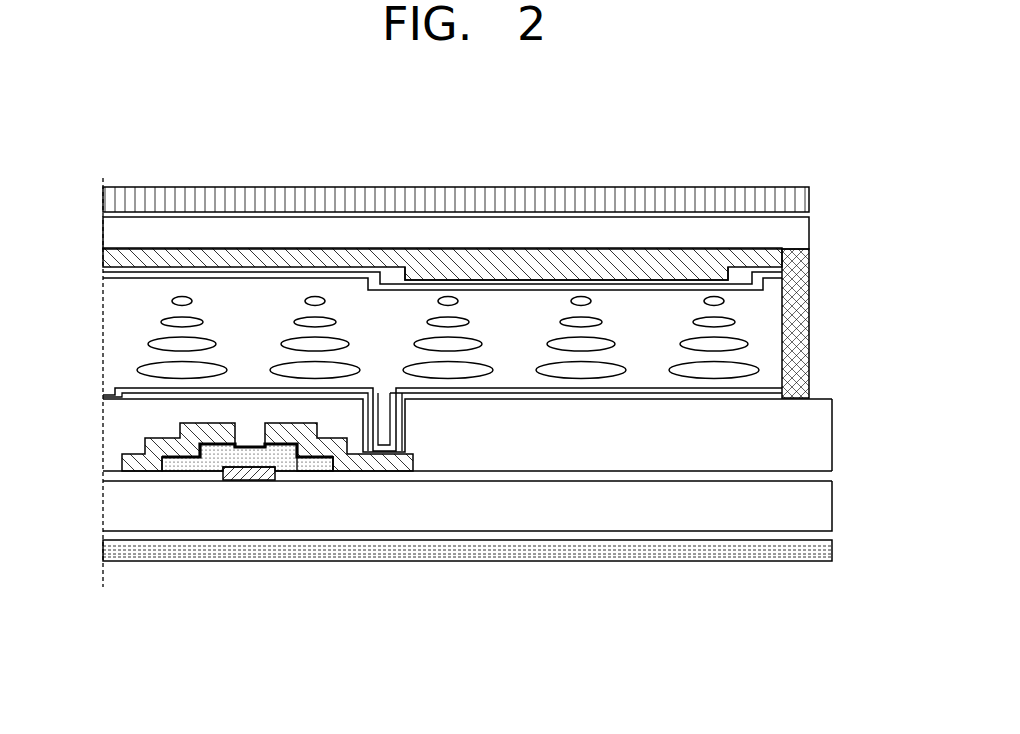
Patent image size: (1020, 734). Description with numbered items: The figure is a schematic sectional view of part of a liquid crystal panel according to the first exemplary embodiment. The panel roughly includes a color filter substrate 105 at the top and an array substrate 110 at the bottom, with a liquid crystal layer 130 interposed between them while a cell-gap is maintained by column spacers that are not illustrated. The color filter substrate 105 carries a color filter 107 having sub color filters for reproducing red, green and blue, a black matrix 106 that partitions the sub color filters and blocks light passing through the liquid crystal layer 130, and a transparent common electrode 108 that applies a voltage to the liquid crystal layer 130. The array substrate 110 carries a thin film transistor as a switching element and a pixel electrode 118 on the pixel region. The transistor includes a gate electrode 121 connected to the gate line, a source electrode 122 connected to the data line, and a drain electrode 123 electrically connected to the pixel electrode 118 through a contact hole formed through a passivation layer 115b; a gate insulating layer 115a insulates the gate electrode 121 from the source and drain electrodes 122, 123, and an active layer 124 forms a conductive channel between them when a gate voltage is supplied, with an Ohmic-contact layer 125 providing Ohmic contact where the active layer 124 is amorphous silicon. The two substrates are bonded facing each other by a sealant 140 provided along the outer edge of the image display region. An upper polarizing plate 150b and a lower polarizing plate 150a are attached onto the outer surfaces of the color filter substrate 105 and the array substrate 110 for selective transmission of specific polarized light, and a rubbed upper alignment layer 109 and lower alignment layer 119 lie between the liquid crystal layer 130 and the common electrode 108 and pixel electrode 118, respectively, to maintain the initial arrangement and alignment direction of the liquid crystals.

The color filter substrate 105 is at (810, 233).
The black matrix 106 is at (103, 256).
The color filter 107 is at (621, 260).
The common electrode 108 is at (103, 272).
The upper alignment layer 109 is at (138, 280).
The array substrate 110 is at (826, 508).
The gate insulating layer 115a is at (826, 476).
The passivation layer 115b is at (826, 443).
The pixel electrode 118 is at (138, 401).
The lower alignment layer 119 is at (103, 397).
The gate electrode 121 is at (250, 480).
The source electrode 122 is at (142, 471).
The drain electrode 123 is at (363, 471).
The active layer 124 is at (193, 471).
The Ohmic-contact layer 125 is at (308, 471).
The liquid crystal layer 130 is at (757, 344).
The sealant 140 is at (805, 306).
The lower polarizing plate 150a is at (826, 551).
The upper polarizing plate 150b is at (810, 197).